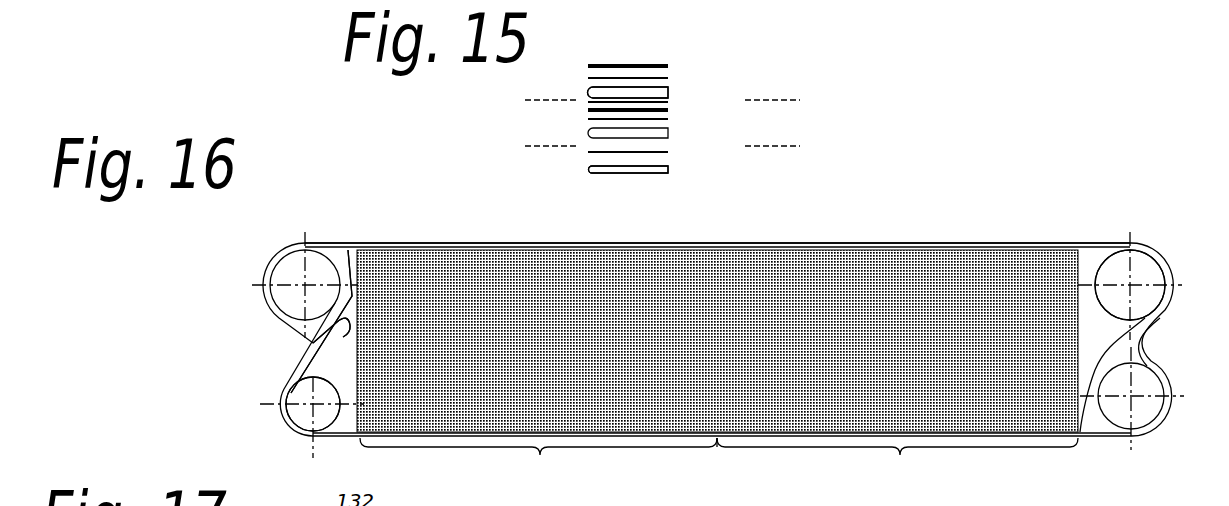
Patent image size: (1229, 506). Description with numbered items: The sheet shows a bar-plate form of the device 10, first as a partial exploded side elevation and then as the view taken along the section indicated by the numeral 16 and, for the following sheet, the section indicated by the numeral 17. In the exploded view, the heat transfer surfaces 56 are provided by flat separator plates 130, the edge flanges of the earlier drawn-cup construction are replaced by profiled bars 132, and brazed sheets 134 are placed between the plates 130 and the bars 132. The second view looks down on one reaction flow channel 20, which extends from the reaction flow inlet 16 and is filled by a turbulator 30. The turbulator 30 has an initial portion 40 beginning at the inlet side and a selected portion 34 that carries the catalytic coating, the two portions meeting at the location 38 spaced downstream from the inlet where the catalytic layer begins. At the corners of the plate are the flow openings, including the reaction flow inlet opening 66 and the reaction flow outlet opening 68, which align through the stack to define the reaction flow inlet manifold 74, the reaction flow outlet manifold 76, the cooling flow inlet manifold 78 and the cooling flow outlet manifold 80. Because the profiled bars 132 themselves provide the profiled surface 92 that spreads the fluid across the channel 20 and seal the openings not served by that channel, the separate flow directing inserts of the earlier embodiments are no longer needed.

In FIG. 15, the device 10 is at (618, 52).
In FIG. 15, the flat separator plate 130 is at (667, 65).
In FIG. 16, the flat separator plate 130 is at (352, 304).
In FIG. 15, the profiled bar 132 is at (669, 88).
In FIG. 16, the profiled bar 132 is at (378, 246).
In FIG. 15, the brazed sheet 134 is at (670, 77).
In FIG. 15, the reaction flow inlet 16 is at (533, 108).
In FIG. 15, the section line of FIG. 17 is at (533, 154).
In FIG. 16, the reaction flow channel 20 is at (974, 244).
In FIG. 16, the turbulator 30 is at (490, 249).
In FIG. 16, the selected portion 34 is at (897, 461).
In FIG. 16, the location 38 is at (718, 453).
In FIG. 16, the initial portion 40 is at (538, 461).
In FIG. 16, the heat transfer surface 56 is at (326, 371).
In FIG. 16, the reaction flow inlet opening 66 is at (330, 420).
In FIG. 16, the reaction flow outlet opening 68 is at (1108, 262).
In FIG. 16, the reaction flow inlet manifold 74 is at (298, 416).
In FIG. 16, the reaction flow outlet manifold 76 is at (1144, 272).
In FIG. 16, the cooling flow inlet manifold 78 is at (1144, 383).
In FIG. 16, the cooling flow outlet manifold 80 is at (291, 273).
In FIG. 16, the profiled surface 92 is at (300, 347).